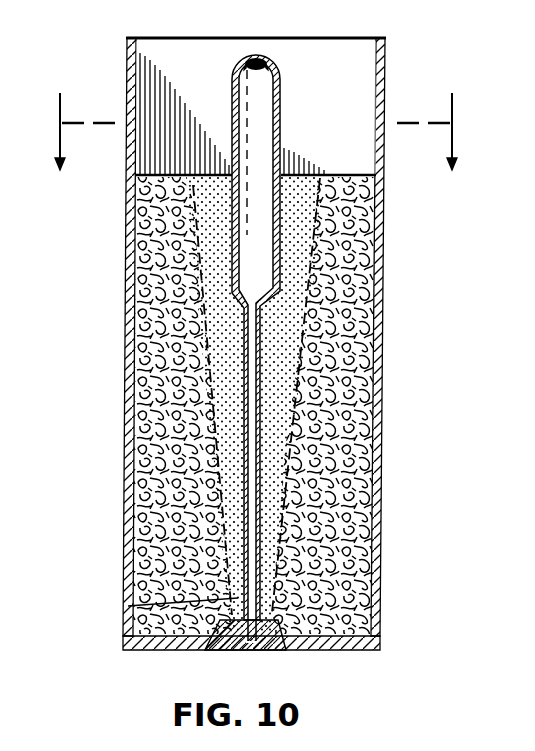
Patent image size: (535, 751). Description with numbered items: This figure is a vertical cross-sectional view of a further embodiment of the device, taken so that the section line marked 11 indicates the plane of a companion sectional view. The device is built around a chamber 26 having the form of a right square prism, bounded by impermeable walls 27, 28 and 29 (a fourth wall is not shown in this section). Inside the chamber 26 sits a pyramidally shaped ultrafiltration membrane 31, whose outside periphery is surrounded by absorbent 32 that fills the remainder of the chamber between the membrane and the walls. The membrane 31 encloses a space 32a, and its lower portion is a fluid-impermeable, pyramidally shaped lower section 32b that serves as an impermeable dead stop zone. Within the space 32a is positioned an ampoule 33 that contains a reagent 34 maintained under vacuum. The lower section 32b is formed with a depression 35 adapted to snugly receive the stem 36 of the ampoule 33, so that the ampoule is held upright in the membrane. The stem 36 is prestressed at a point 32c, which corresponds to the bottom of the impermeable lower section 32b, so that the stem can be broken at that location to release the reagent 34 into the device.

The section line 11- 11 is at (253, 117).
The chamber 26 is at (382, 634).
The impermeable wall 27 is at (382, 427).
The impermeable wall 28 is at (127, 502).
The impermeable wall 29 is at (347, 146).
The ultrafiltration membrane 31 is at (205, 257).
The absorbent 32 is at (142, 366).
The space 32a is at (283, 357).
The impermeable lower section 32b is at (128, 606).
The prestressed point 32c is at (235, 620).
The ampoule 33 is at (233, 100).
The reagent 34 is at (256, 78).
The depression 35 is at (283, 652).
The stem 36 is at (249, 641).